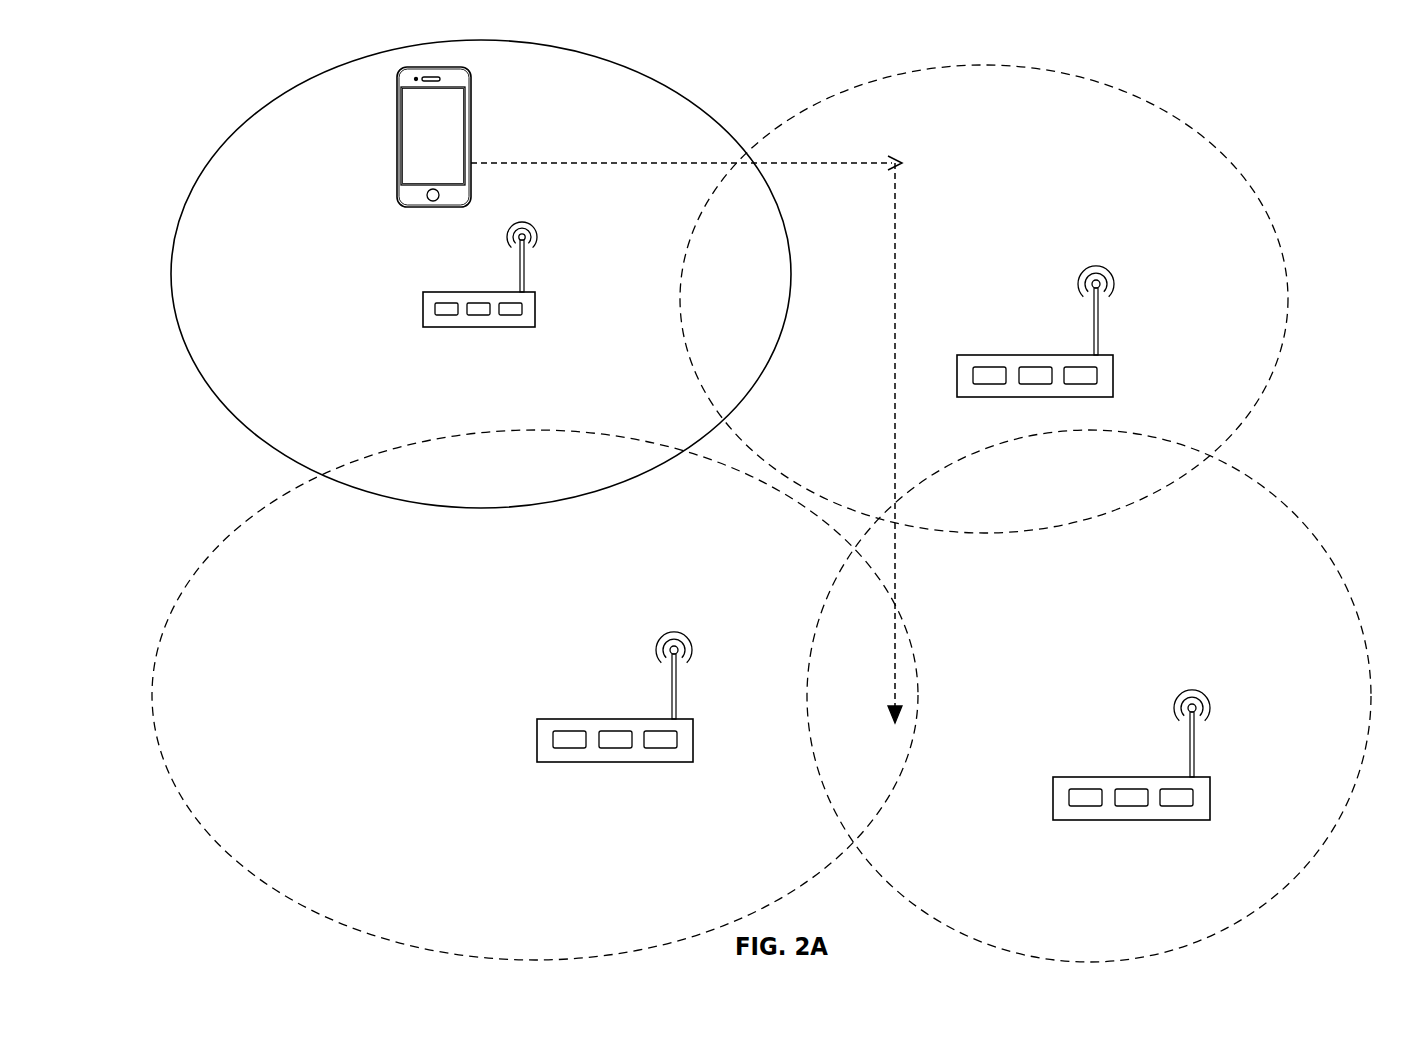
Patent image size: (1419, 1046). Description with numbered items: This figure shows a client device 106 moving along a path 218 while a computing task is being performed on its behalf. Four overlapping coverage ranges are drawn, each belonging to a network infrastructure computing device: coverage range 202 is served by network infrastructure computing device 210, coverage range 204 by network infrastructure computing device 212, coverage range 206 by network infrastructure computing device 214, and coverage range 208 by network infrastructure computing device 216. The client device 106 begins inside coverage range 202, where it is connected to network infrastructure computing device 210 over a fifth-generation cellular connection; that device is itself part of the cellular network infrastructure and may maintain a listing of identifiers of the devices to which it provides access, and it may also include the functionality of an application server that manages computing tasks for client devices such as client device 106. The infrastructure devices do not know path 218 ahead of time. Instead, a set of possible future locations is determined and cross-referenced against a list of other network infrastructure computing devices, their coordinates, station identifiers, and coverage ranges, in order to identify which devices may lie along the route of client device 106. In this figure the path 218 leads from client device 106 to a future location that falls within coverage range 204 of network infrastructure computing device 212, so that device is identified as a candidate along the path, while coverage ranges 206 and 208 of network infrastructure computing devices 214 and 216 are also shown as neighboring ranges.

The client device 106 is at (471, 140).
The coverage range 202 is at (215, 150).
The coverage range 204 is at (1250, 187).
The coverage range 206 is at (206, 565).
The coverage range 208 is at (1337, 562).
The network infrastructure computing device 210 is at (526, 280).
The network infrastructure computing device 212 is at (1100, 336).
The network infrastructure computing device 214 is at (678, 702).
The network infrastructure computing device 216 is at (1197, 760).
The path 218 is at (896, 311).